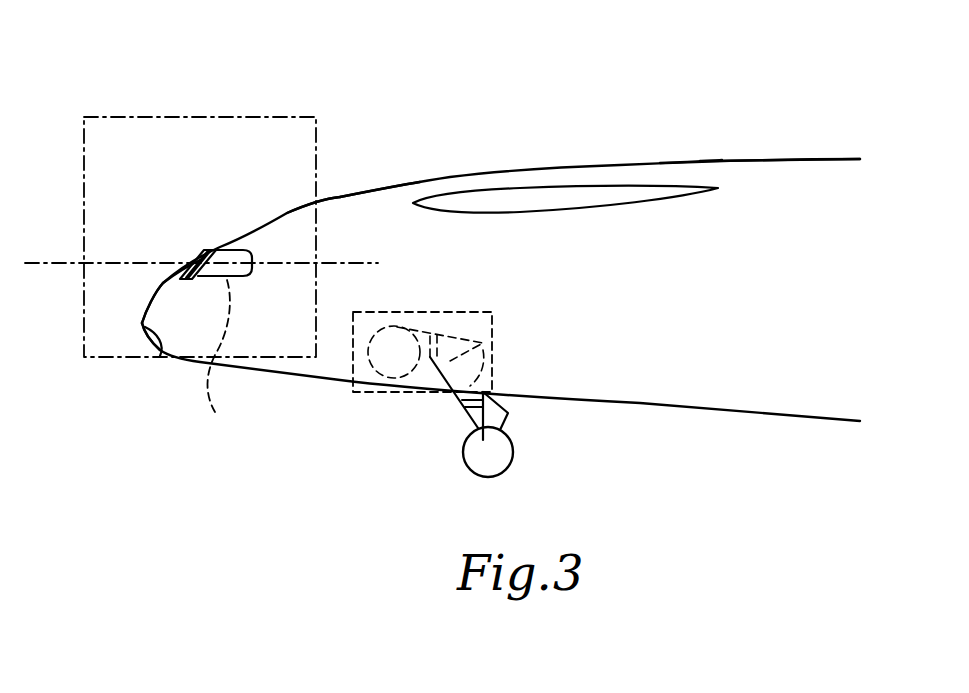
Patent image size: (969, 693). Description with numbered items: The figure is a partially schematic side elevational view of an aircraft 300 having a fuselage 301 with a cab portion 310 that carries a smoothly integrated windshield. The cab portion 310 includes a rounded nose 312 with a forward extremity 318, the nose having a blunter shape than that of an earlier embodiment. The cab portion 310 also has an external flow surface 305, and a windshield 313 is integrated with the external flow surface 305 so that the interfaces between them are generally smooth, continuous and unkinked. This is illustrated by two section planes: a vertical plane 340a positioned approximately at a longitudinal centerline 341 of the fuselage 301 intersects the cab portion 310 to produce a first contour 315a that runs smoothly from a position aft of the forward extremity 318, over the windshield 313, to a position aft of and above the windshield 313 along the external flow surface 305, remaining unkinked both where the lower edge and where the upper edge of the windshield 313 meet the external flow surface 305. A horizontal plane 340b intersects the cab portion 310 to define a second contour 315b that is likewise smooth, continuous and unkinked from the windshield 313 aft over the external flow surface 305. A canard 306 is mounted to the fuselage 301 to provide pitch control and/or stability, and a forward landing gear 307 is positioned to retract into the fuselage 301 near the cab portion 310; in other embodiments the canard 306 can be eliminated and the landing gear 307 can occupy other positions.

The aircraft 300 is at (612, 116).
The fuselage 301 is at (790, 177).
The external flow surface 305 is at (375, 240).
The canard 306 is at (545, 197).
The forward landing gear 307 is at (520, 428).
The cab portion 310 is at (347, 152).
The rounded nose 312 is at (160, 352).
The windshield 313 is at (203, 255).
The first contour 315a is at (167, 286).
The second contour 315b is at (219, 363).
The forward extremity 318 is at (142, 323).
The vertical plane 340a is at (258, 116).
The horizontal plane 340b is at (348, 263).
The longitudinal centerline 341 is at (722, 160).